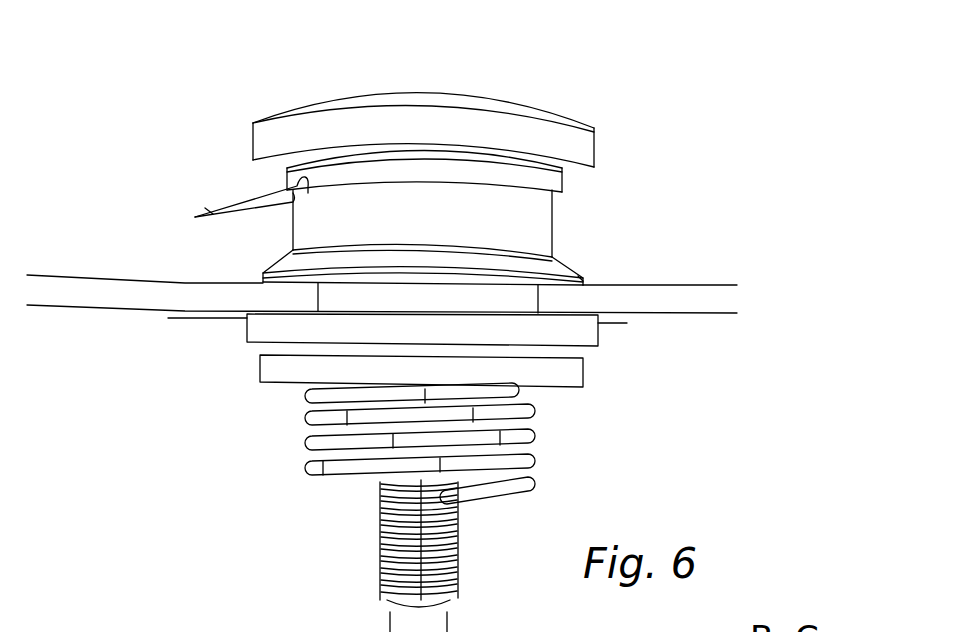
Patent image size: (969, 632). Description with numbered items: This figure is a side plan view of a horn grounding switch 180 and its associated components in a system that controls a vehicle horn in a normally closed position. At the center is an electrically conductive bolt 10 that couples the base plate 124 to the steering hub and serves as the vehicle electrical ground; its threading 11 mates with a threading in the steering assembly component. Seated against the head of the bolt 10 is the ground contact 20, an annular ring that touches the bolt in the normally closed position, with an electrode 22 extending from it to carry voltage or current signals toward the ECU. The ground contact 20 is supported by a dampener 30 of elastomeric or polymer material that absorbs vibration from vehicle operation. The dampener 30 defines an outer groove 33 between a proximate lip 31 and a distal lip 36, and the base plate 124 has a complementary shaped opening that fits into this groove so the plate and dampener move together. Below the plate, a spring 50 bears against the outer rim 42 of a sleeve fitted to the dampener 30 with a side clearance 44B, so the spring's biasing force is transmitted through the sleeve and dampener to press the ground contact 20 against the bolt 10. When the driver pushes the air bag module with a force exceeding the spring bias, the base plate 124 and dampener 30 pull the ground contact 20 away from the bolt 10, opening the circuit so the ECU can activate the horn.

The bolt 10 is at (423, 130).
The ground contact 20 is at (563, 177).
The electrode 22 is at (232, 203).
The dampener 30 is at (435, 229).
The proximate lip 31 is at (288, 261).
The outer groove 33 is at (594, 281).
The distal lip 36 is at (590, 340).
The outer rim 42 is at (573, 373).
The side clearance 44B is at (273, 346).
The spring 50 is at (527, 433).
The base plate 124 is at (683, 295).
The horn grounding switch 180 is at (655, 75).
The threading 11 is at (419, 556).